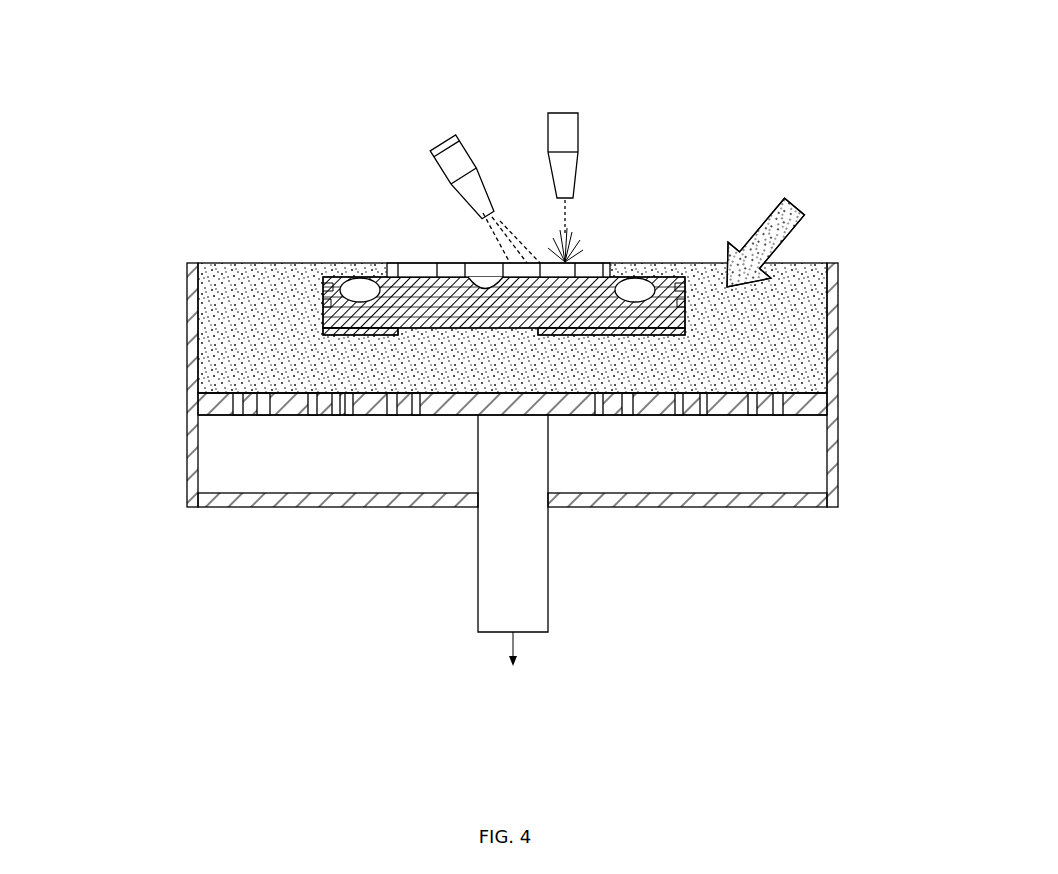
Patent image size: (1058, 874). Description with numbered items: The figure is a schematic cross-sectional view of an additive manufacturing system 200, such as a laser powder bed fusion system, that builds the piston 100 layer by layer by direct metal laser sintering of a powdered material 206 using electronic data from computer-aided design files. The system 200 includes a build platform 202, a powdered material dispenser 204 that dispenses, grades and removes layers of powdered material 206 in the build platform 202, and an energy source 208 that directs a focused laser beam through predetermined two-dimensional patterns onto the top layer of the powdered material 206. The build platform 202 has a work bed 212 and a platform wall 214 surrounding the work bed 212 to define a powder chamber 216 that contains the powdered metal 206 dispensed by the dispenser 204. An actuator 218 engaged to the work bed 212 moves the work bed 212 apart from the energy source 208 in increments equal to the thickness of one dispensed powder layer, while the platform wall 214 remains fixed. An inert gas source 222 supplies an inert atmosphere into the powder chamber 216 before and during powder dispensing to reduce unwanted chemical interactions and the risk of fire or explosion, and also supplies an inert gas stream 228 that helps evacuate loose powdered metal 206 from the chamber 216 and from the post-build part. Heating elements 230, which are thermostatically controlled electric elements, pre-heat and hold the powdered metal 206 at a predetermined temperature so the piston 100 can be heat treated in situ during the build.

The piston 100 is at (337, 274).
The additive manufacturing system 200 is at (716, 98).
The build platform 202 is at (501, 425).
The powdered material dispenser 204 is at (788, 222).
The powdered material 206 is at (255, 292).
The energy source 208 is at (560, 127).
The work bed 212 is at (455, 490).
The platform wall 214 is at (830, 328).
The powder chamber 216 is at (798, 318).
The actuator 218 is at (487, 570).
The inert gas source 222 is at (448, 167).
The inert gas stream 228 is at (508, 245).
The heating elements 230 is at (330, 417).